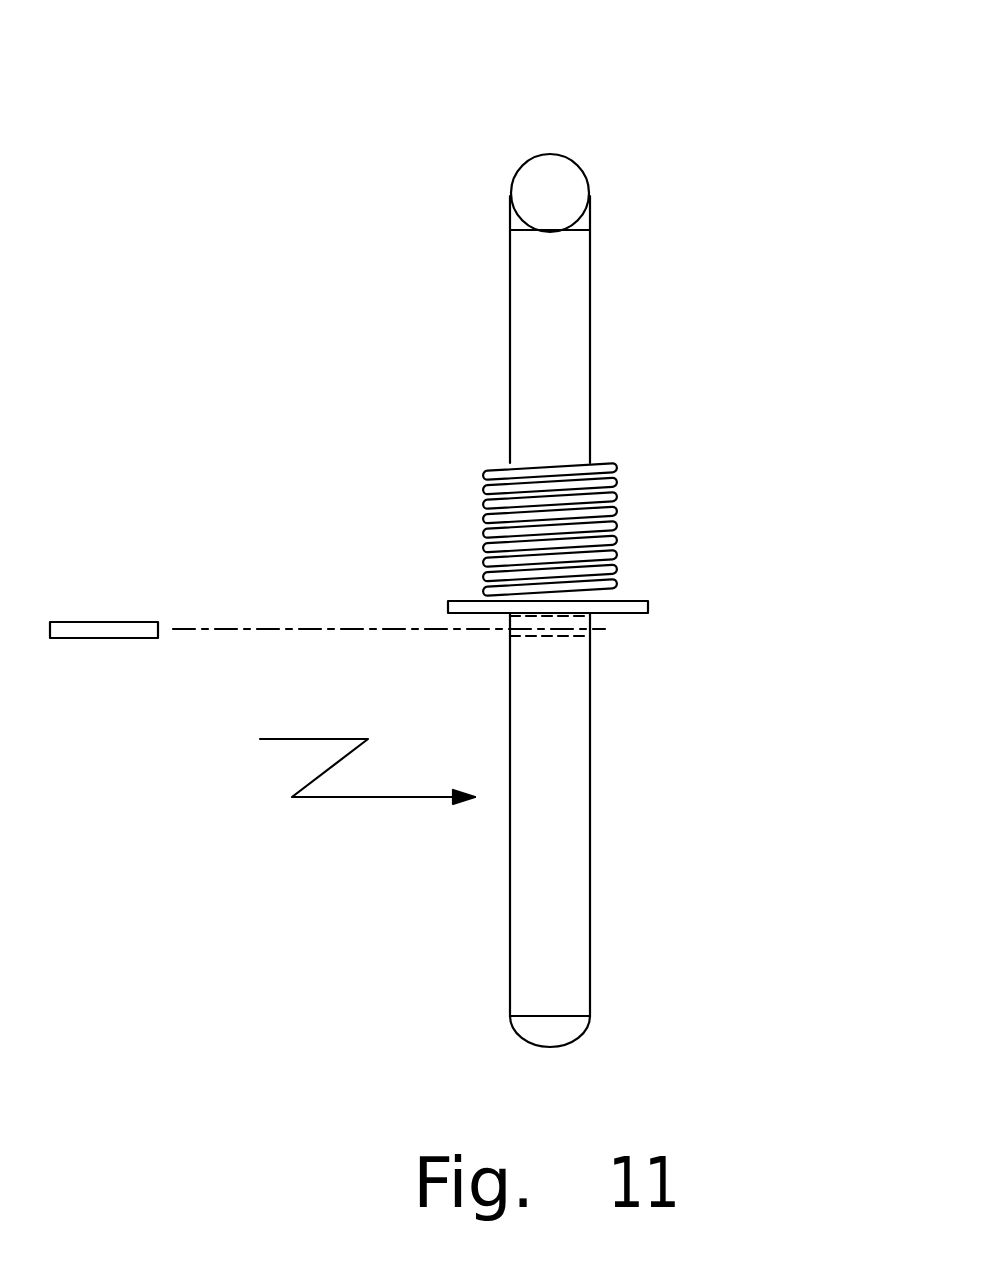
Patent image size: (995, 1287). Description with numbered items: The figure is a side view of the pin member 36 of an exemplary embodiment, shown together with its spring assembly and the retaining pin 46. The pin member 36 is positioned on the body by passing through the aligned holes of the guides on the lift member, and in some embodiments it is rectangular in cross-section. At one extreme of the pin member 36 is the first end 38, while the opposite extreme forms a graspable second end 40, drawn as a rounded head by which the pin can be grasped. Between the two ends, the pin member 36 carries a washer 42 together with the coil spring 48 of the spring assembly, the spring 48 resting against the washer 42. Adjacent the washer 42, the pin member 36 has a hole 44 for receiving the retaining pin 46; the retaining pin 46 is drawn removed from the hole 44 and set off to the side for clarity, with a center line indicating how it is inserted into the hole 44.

The pin member 36 is at (319, 757).
The first end 38 is at (711, 621).
The graspable second end 40 is at (711, 124).
The washer 42 is at (680, 688).
The hole 44 is at (711, 734).
The retaining pin 46 is at (327, 560).
The coil spring 48 is at (697, 529).